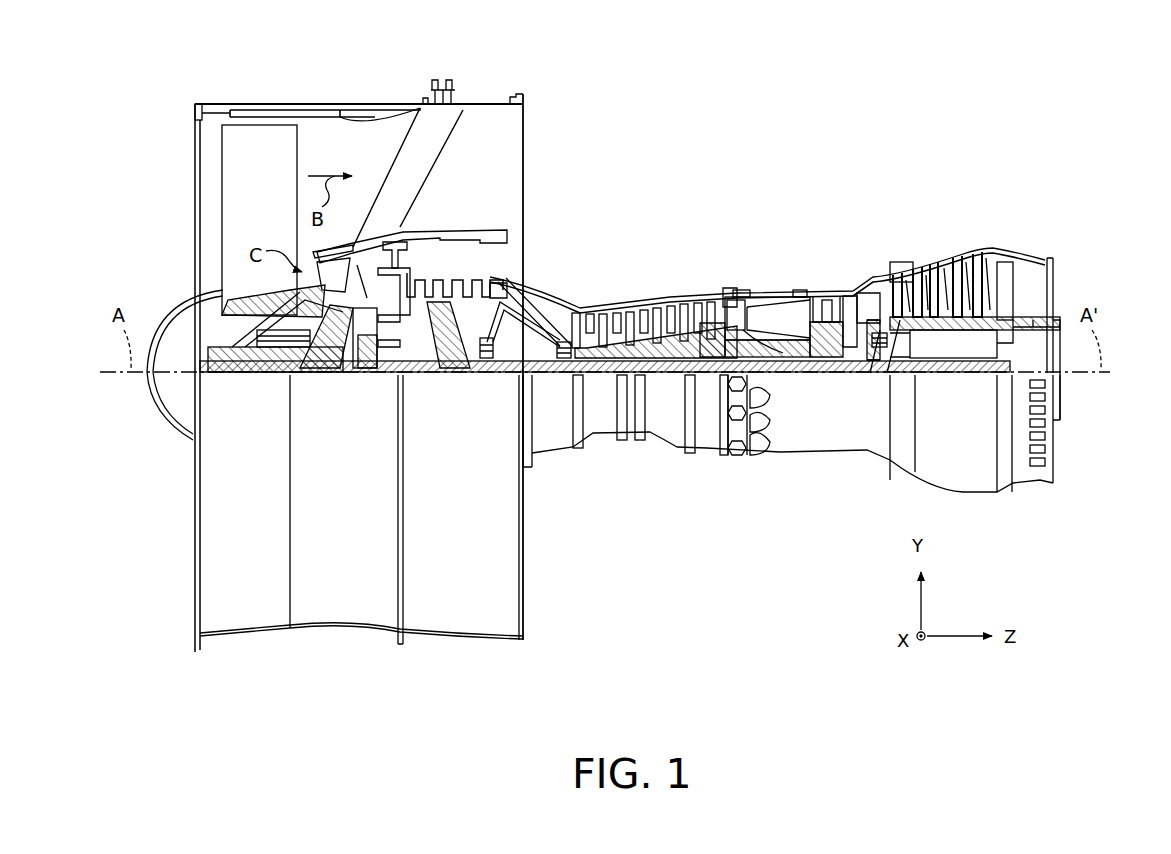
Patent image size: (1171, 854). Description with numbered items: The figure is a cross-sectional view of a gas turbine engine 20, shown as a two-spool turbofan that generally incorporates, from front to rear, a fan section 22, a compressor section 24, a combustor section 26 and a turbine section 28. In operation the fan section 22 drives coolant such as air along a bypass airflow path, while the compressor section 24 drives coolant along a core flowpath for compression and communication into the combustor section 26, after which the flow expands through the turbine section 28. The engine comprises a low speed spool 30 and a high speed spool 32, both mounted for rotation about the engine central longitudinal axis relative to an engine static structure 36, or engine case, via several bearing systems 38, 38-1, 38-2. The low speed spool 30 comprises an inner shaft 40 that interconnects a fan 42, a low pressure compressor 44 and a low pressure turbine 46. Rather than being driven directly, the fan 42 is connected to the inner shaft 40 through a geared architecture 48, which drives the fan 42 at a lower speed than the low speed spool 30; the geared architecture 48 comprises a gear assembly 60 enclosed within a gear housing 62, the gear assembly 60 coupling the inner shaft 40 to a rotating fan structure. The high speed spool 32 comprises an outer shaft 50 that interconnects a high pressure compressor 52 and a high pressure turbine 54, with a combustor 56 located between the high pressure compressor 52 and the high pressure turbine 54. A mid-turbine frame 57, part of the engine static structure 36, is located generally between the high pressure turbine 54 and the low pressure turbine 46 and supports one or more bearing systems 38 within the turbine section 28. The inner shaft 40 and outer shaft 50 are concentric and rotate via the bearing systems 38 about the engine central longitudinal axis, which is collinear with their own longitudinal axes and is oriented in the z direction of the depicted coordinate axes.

The gas turbine engine 20 is at (811, 100).
The fan section 22 is at (378, 88).
The compressor section 24 is at (402, 198).
The combustor section 26 is at (815, 198).
The turbine section 28 is at (1005, 198).
The low speed spool 30 is at (673, 380).
The high speed spool 32 is at (712, 312).
The engine static structure 36 is at (172, 662).
The bearing system 38 is at (872, 375).
The bearing system 38-1 is at (260, 374).
The bearing system 38-2 is at (470, 375).
The inner shaft 40 is at (543, 378).
The fan 42 is at (262, 224).
The low pressure compressor 44 is at (467, 276).
The low pressure turbine 46 is at (950, 260).
The geared architecture 48 is at (358, 405).
The outer shaft 50 is at (777, 362).
The high pressure compressor 52 is at (660, 308).
The high pressure turbine 54 is at (836, 296).
The combustor 56 is at (790, 302).
The mid-turbine frame 57 is at (873, 283).
The gear assembly 60 is at (378, 340).
The gear housing 62 is at (378, 318).